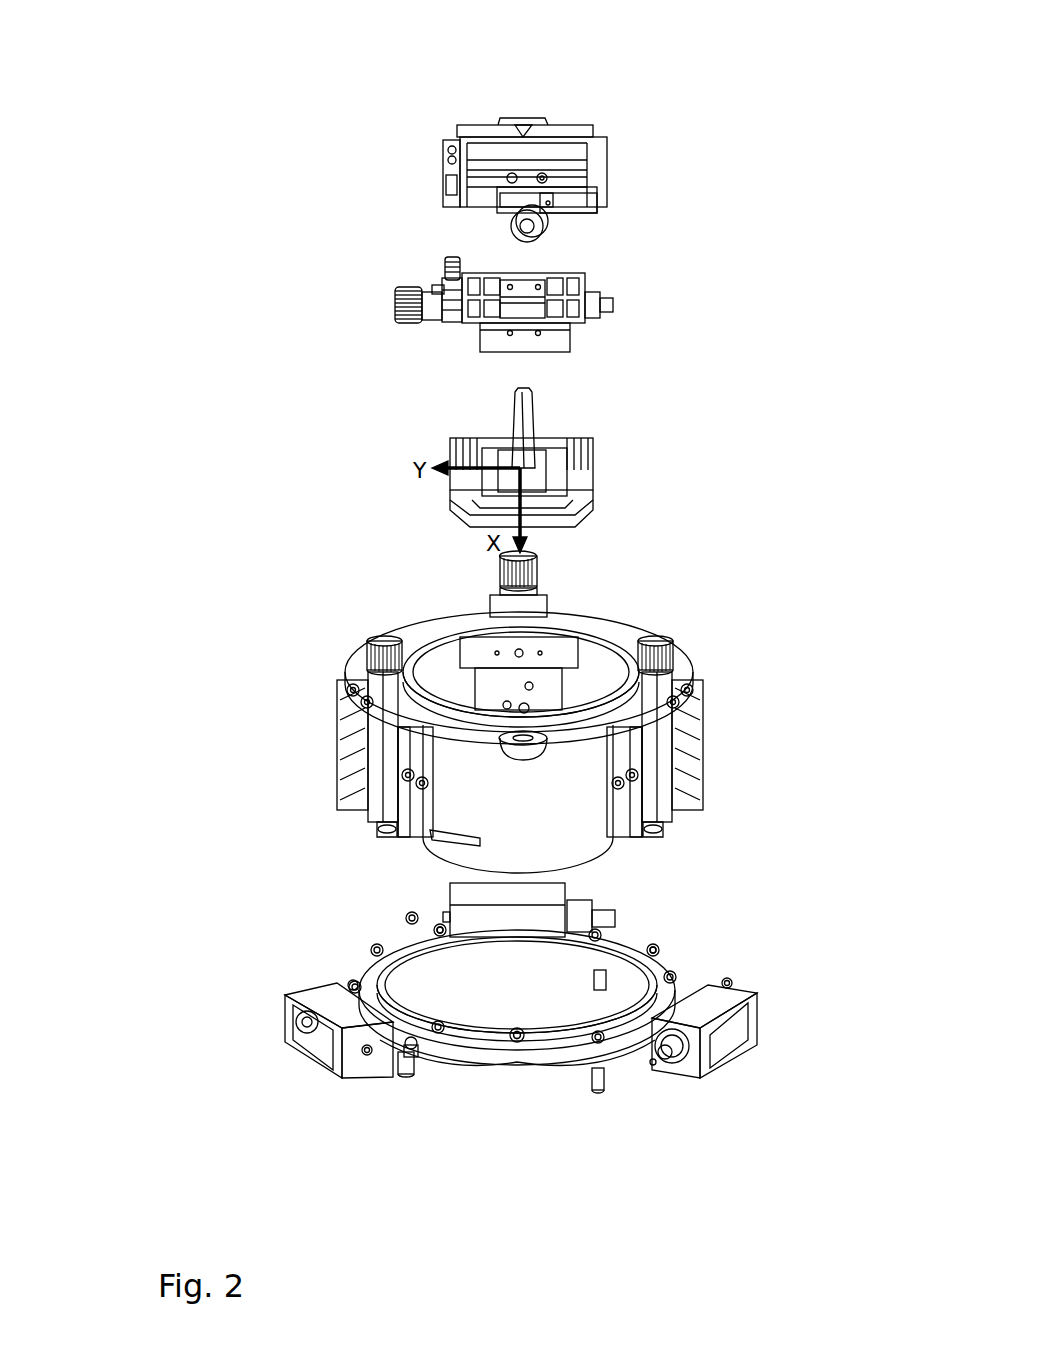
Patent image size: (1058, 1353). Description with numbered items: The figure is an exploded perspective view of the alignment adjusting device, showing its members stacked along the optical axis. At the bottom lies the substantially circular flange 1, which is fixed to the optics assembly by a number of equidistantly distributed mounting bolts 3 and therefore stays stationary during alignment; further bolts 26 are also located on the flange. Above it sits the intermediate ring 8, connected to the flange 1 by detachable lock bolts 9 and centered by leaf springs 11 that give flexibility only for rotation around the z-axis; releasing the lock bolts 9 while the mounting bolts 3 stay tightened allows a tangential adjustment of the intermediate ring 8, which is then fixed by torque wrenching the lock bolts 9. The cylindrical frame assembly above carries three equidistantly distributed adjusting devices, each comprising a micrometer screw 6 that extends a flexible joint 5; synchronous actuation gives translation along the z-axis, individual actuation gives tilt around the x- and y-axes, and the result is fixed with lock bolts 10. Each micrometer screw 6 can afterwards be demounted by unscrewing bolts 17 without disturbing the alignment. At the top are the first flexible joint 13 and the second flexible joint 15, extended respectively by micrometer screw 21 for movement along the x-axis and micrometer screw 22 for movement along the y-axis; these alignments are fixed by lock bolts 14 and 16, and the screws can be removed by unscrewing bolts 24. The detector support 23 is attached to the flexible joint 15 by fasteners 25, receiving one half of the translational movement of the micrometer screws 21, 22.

The flange 1 is at (503, 1068).
The mounting bolt 3 is at (603, 1086).
The flexible joint 5 is at (343, 710).
The micrometer screw 6 is at (538, 560).
The intermediate ring 8 is at (470, 1045).
The lock bolt 9 is at (465, 930).
The lock bolt 10 is at (360, 700).
The leaf spring 11 is at (413, 1075).
The flexible joint 13 is at (612, 140).
The lock bolt 14 is at (543, 176).
The flexible joint 15 is at (587, 283).
The lock bolt 16 is at (444, 260).
The bolt 17 is at (490, 597).
The micrometer screw 21 is at (548, 231).
The micrometer screw 22 is at (394, 306).
The detector support 23 is at (562, 342).
The bolt 24 is at (553, 212).
The fastener 25 is at (508, 331).
The bolt 26 is at (408, 917).